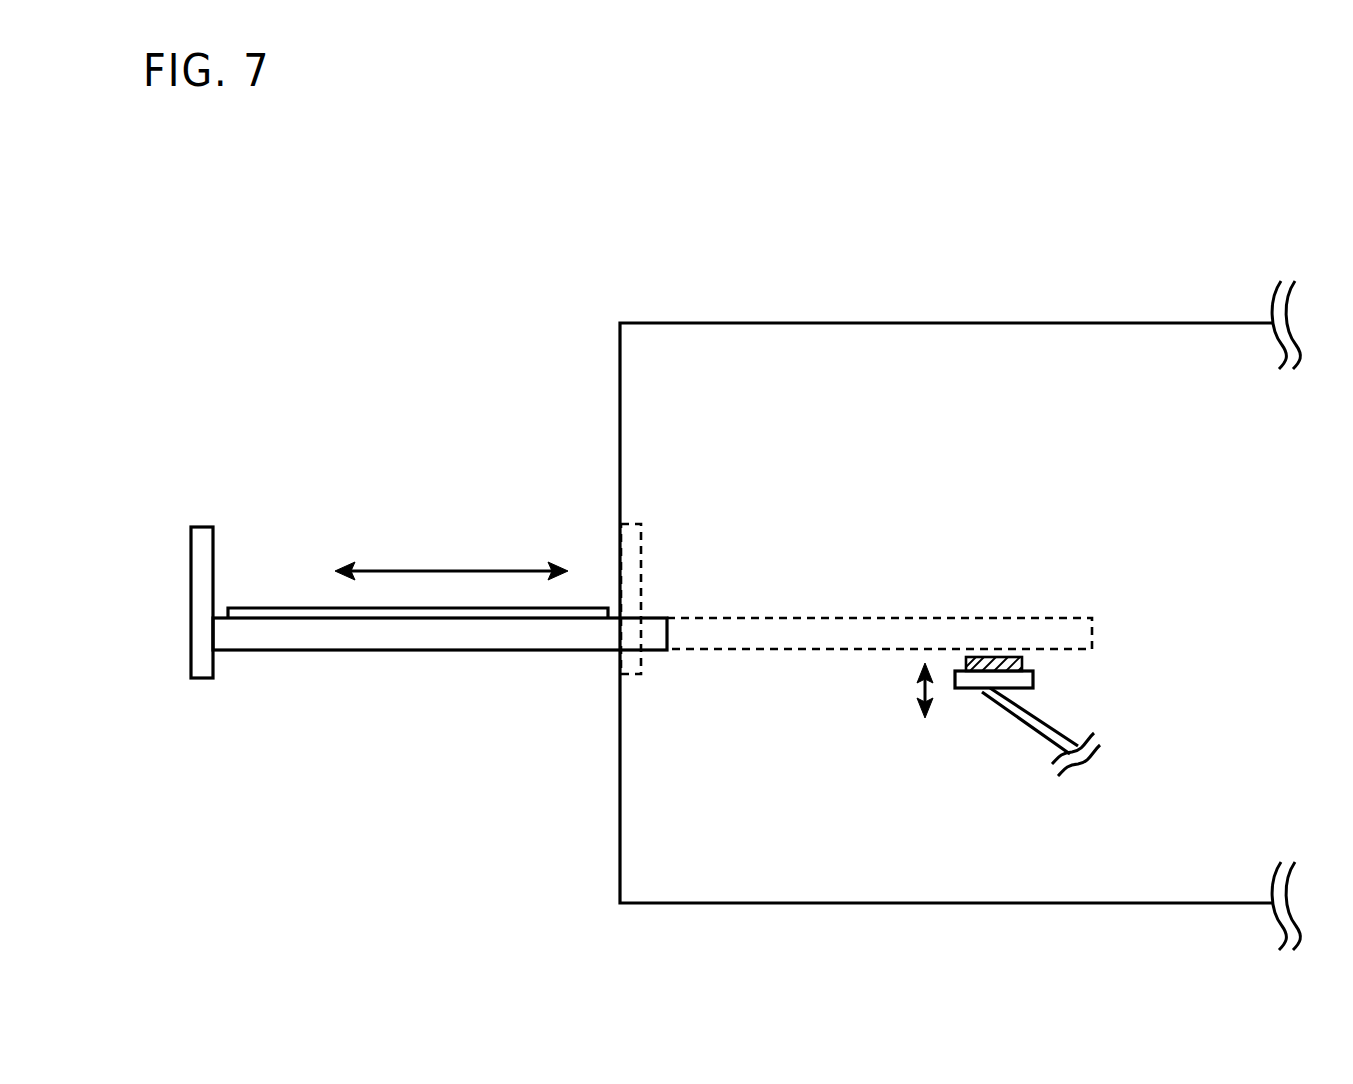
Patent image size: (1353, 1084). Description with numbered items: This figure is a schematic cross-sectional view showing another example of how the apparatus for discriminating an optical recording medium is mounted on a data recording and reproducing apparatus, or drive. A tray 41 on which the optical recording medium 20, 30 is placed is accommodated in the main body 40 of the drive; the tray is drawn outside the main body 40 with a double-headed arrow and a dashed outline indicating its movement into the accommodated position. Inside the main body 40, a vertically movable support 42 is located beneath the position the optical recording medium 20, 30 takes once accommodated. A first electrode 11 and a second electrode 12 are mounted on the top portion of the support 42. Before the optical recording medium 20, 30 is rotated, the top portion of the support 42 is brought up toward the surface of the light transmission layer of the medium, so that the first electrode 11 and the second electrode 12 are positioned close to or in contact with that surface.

The main body 40 is at (821, 323).
The tray 41 is at (191, 597).
The optical recording medium 20 is at (652, 575).
The optical recording medium 30 is at (285, 608).
The first electrode 11 is at (1113, 688).
The second electrode 12 is at (1022, 662).
The support 42 is at (972, 681).